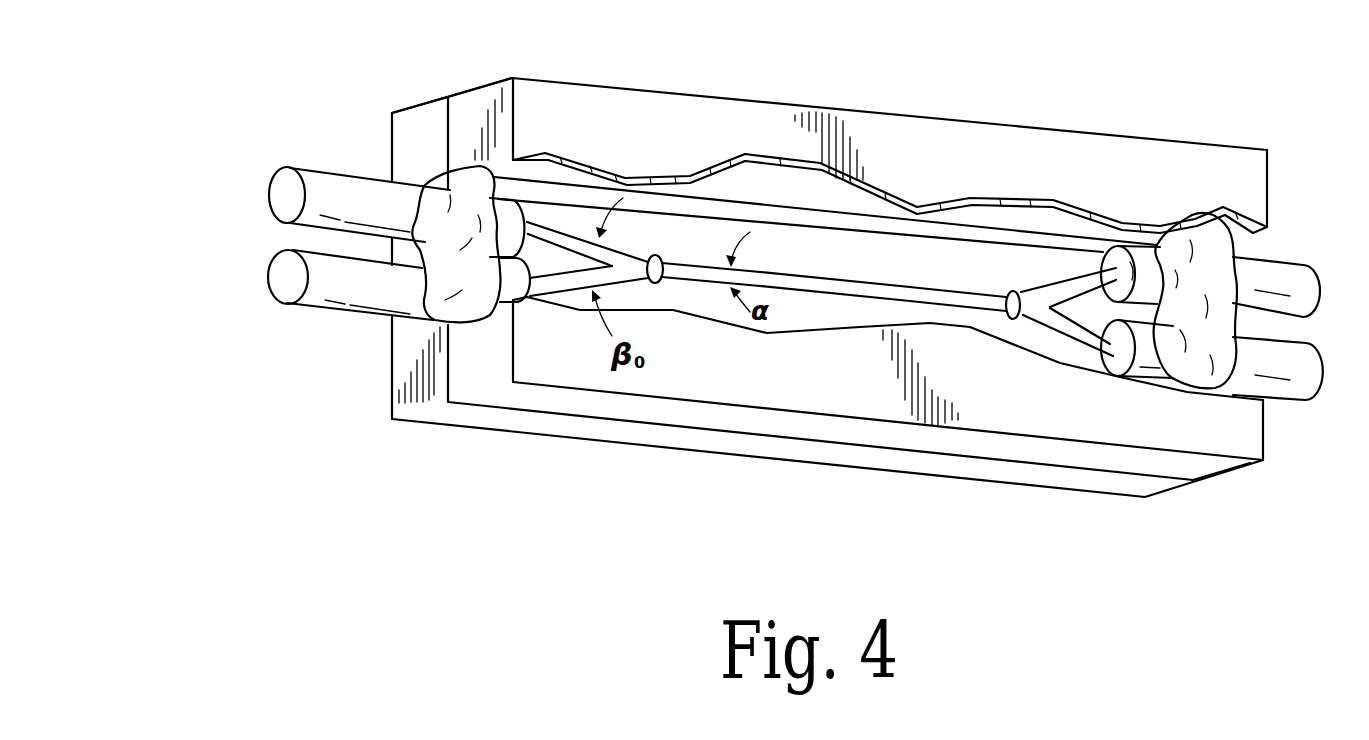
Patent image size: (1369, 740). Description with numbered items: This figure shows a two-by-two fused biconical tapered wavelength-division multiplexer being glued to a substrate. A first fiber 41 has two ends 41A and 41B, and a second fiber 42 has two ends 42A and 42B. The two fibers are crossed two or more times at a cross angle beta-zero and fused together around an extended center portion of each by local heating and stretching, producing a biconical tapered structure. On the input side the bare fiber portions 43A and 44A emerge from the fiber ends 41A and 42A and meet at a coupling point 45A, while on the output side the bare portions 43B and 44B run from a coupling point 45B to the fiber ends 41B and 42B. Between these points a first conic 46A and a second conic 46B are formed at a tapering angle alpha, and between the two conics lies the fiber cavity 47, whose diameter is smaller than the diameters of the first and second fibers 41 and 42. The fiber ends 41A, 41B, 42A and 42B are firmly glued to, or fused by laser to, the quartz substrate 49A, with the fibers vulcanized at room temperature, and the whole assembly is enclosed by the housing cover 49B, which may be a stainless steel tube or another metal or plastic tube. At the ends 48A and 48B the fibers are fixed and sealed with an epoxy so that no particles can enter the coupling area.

The first fiber 41 is at (287, 192).
The end of first fiber 41A is at (342, 193).
The end of first fiber 41B is at (1277, 272).
The second fiber 42 is at (287, 272).
The end of second fiber 42A is at (362, 285).
The end of second fiber 42B is at (1308, 368).
The bare fiber portion of first fiber (input side) 43A is at (555, 236).
The bare fiber portion of first fiber (output side) 43B is at (1075, 285).
The bare fiber portion of second fiber (input side) 44A is at (562, 283).
The bare fiber portion of second fiber (output side) 44B is at (1080, 335).
The first fused coupling point 45A is at (656, 255).
The second fused coupling point 45B is at (1013, 320).
The first conic 46A is at (714, 262).
The second conic 46B is at (960, 295).
The fiber cavity 47 is at (852, 282).
The end of fused fiber 48A is at (457, 272).
The end of fused fiber 48B is at (1197, 372).
The quartz substrate 49A is at (417, 135).
The housing cover 49B is at (473, 117).